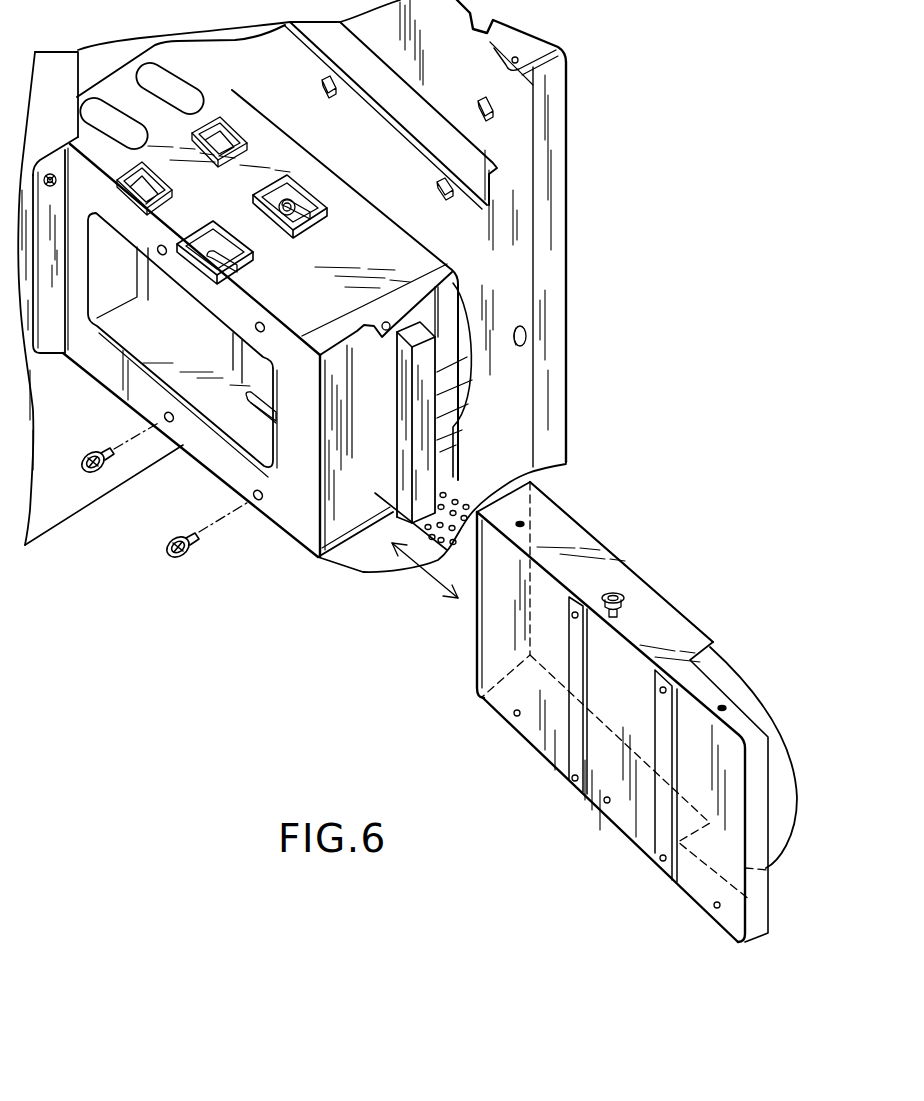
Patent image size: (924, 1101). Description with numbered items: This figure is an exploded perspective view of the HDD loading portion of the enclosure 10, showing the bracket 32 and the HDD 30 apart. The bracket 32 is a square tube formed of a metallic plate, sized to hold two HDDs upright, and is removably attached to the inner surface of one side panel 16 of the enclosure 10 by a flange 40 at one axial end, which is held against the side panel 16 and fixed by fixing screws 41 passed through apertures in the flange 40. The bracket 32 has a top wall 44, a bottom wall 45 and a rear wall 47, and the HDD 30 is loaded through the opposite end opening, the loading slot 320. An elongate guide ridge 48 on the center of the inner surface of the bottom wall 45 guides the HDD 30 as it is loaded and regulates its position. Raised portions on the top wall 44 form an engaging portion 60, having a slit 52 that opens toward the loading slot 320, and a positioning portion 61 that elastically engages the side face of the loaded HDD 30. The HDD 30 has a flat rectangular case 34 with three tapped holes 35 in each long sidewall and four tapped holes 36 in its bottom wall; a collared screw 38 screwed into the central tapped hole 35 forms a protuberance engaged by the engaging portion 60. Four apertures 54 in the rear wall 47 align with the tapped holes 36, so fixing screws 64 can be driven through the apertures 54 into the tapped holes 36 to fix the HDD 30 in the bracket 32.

The enclosure 10 is at (593, 245).
The side panel 16 is at (68, 66).
The HDD 30 is at (690, 632).
The bracket 32 is at (210, 80).
The loading slot 320 is at (327, 408).
The case 34 is at (568, 531).
The tapped holes 35 is at (518, 521).
The tapped holes 36 is at (573, 618).
The collared screw 38 is at (300, 196).
The flange 40 is at (54, 338).
The fixing screws 41 is at (51, 173).
The top wall 44 is at (377, 231).
The bottom wall 45 is at (336, 532).
The rear wall 47 is at (296, 538).
The guide ridge 48 is at (360, 481).
The slit 52 is at (225, 276).
The apertures 54 is at (157, 251).
The engaging portion 60 is at (304, 172).
The positioning portion 61 is at (232, 127).
The fixing screws 64 is at (95, 473).